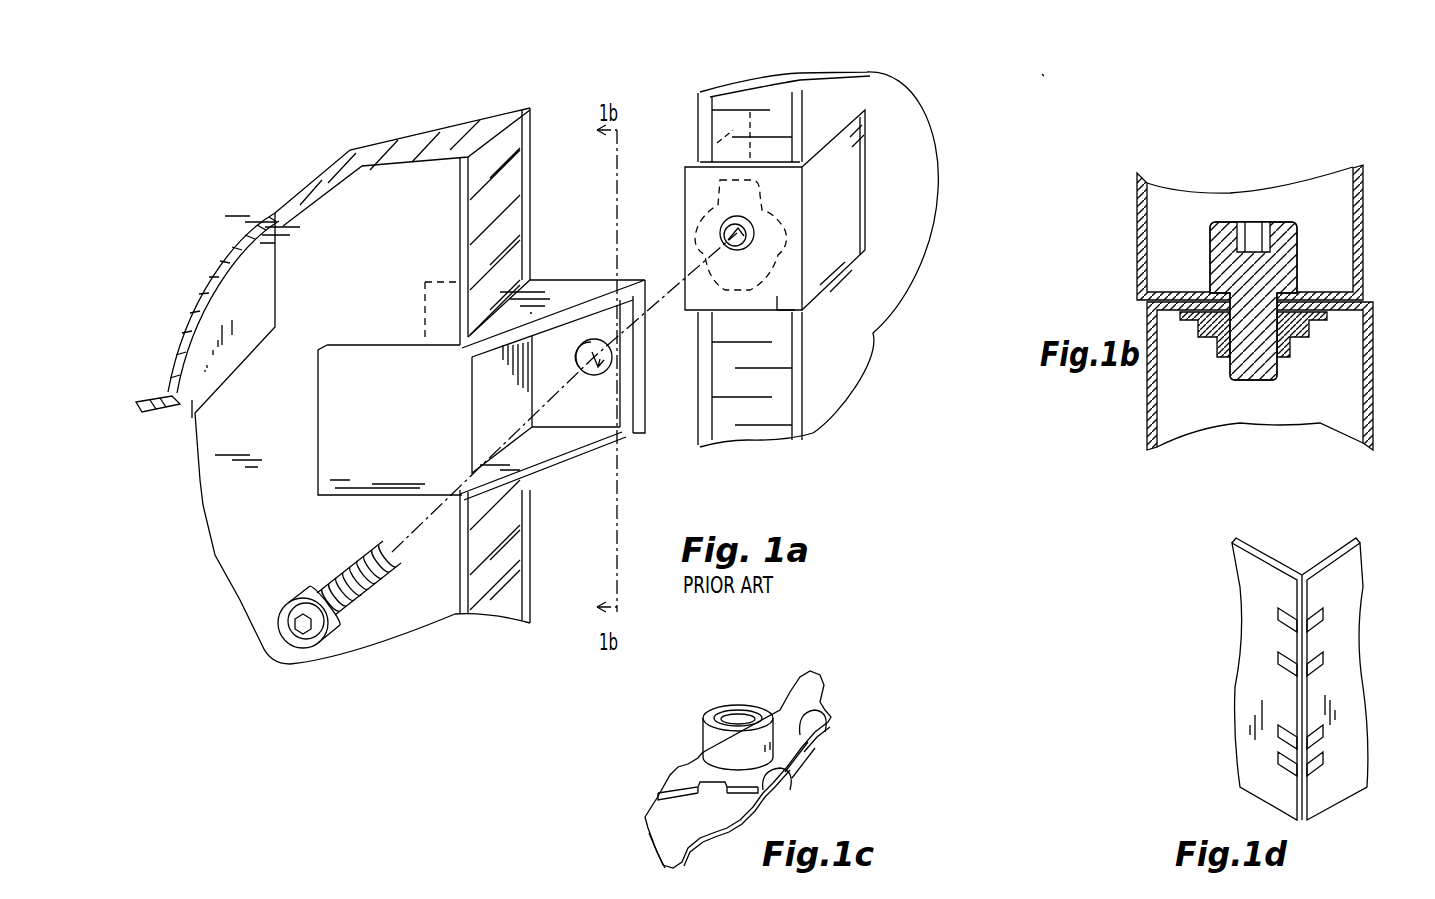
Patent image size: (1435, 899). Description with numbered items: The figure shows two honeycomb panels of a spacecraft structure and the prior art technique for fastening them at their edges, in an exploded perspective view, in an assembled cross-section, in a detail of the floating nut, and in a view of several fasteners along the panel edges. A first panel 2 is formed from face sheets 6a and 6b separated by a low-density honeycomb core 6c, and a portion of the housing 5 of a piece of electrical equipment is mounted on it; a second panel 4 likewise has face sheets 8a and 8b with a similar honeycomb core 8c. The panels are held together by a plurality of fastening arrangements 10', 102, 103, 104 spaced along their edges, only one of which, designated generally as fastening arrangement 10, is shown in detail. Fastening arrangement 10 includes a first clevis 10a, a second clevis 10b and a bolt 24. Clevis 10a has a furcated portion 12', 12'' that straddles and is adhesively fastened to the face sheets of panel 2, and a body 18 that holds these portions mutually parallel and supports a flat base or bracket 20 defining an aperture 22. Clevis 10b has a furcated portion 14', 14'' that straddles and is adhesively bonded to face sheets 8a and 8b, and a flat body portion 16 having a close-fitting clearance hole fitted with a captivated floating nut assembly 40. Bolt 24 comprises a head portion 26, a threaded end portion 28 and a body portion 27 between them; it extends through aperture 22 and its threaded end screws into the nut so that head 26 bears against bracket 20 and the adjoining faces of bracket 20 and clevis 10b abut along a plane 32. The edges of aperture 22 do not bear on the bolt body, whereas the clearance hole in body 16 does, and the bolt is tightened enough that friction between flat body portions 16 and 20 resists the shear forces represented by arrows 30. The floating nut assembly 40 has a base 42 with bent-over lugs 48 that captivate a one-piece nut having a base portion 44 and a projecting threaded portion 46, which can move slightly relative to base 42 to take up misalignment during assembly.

In FIG. 1A, the panel 2 is at (263, 593).
In FIG. 1D, the panel 2 is at (1260, 597).
In FIG. 1A, the panel 4 is at (880, 282).
In FIG. 1D, the panel 4 is at (1337, 602).
In FIG. 1A, the housing 5 is at (192, 418).
In FIG. 1A, the face sheet 6a is at (468, 150).
In FIG. 1A, the face sheet 6b is at (532, 160).
In FIG. 1A, the honeycomb core 6c is at (500, 223).
In FIG. 1A, the face sheet 8a is at (700, 95).
In FIG. 1A, the face sheet 8b is at (910, 173).
In FIG. 1A, the honeycomb core 8c is at (753, 418).
In FIG. 1A, the fastening arrangement 10 is at (970, 247).
In FIG. 1A, the first clevis 10a is at (580, 283).
In FIG. 1B, the first clevis 10a is at (1330, 197).
In FIG. 1A, the second clevis 10b is at (860, 170).
In FIG. 1B, the second clevis 10b is at (1353, 387).
In FIG. 1D, the fastening arrangement 10' is at (1335, 635).
In FIG. 1D, the fastening arrangement 102 is at (1323, 670).
In FIG. 1D, the fastening arrangement 103 is at (1323, 730).
In FIG. 1D, the fastening arrangement 104 is at (1323, 760).
In FIG. 1A, the furcated portion 12' is at (390, 400).
In FIG. 1A, the furcated portion 12'' is at (422, 299).
In FIG. 1A, the furcated portion 14' is at (705, 134).
In FIG. 1A, the furcated portion 14'' is at (904, 245).
In FIG. 1A, the flat body portion 16 is at (783, 307).
In FIG. 1B, the flat body portion 16 is at (1360, 395).
In FIG. 1A, the body 18 is at (540, 447).
In FIG. 1A, the bracket 20 is at (626, 417).
In FIG. 1B, the bracket 20 is at (1162, 292).
In FIG. 1A, the aperture 22 is at (585, 352).
In FIG. 1B, the aperture 22 is at (1278, 280).
In FIG. 1A, the bolt 24 is at (326, 555).
In FIG. 1B, the bolt 24 is at (1253, 383).
In FIG. 1A, the head portion 26 is at (340, 650).
In FIG. 1B, the head portion 26 is at (1218, 222).
In FIG. 1A, the body portion 27 is at (363, 593).
In FIG. 1A, the threaded end portion 28 is at (368, 543).
In FIG. 1B, the shear forces 30 is at (1378, 283).
In FIG. 1B, the plane 32 is at (1365, 295).
In FIG. 1A, the floating nut assembly 40 is at (707, 263).
In FIG. 1B, the floating nut assembly 40 is at (1214, 389).
In FIG. 1C, the floating nut assembly 40 is at (867, 765).
In FIG. 1B, the base 42 is at (1150, 390).
In FIG. 1C, the base 42 is at (670, 832).
In FIG. 1B, the base portion 44 is at (1150, 422).
In FIG. 1C, the base portion 44 is at (692, 760).
In FIG. 1B, the threaded portion 46 is at (1282, 360).
In FIG. 1C, the threaded portion 46 is at (750, 710).
In FIG. 1B, the bent-over lugs 48 is at (1323, 340).
In FIG. 1C, the bent-over lugs 48 is at (787, 782).